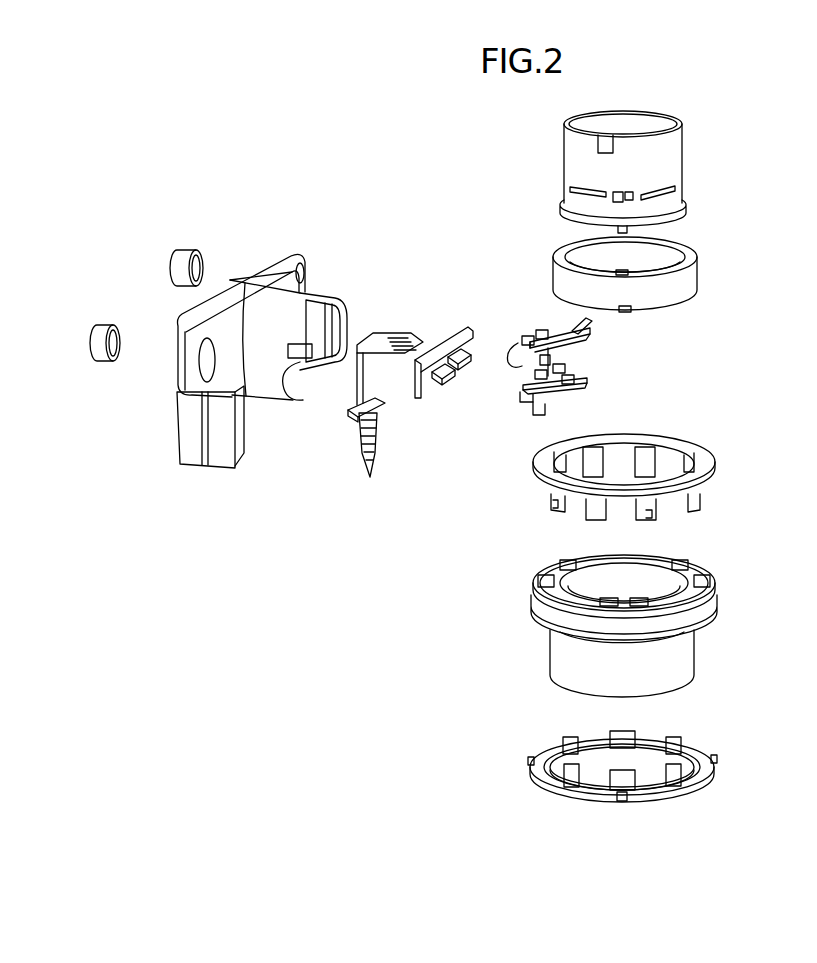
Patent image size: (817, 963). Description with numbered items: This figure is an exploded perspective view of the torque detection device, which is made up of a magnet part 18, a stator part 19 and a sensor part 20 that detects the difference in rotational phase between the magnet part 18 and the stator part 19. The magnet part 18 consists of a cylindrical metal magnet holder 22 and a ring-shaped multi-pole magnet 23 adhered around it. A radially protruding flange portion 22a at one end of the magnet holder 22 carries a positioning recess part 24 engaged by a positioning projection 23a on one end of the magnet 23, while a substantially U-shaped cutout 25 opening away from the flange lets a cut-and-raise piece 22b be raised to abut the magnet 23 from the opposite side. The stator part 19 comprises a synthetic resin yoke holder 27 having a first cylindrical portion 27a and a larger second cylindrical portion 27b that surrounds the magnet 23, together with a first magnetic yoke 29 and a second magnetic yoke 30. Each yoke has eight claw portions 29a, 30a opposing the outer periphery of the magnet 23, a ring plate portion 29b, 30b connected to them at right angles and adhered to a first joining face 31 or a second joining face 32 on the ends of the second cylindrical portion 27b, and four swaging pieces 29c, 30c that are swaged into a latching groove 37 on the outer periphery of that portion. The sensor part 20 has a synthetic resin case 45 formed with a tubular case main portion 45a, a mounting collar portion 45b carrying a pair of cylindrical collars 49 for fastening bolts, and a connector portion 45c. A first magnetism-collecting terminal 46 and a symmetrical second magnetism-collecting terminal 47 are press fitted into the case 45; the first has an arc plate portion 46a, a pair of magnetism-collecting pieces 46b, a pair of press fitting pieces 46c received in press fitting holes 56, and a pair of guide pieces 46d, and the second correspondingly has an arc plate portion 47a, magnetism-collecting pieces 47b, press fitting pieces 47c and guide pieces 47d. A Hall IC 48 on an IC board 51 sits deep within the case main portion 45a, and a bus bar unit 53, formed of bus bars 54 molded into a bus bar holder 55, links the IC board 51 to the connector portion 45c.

The magnet part 18 is at (557, 188).
The stator part 19 is at (723, 603).
The sensor part 20 is at (285, 246).
The magnet holder 22 is at (672, 165).
The flange portion 22a is at (690, 216).
The cut-and-raise piece 22b is at (620, 226).
The magnet 23 is at (690, 280).
The positioning projection 23a is at (628, 276).
The positioning recess part 24 is at (655, 247).
The cutout 25 is at (628, 192).
The yoke holder 27 is at (543, 658).
The first cylindrical portion 27a is at (688, 668).
The second cylindrical portion 27b is at (550, 622).
The first magnetic yoke 29 is at (724, 774).
The claw portions 29a is at (672, 740).
The ring plate portion 29b is at (672, 805).
The swaging pieces 29c is at (528, 760).
The second magnetic yoke 30 is at (720, 454).
The claw portions 30a is at (668, 517).
The ring plate portion 30b is at (683, 447).
The swaging pieces 30c is at (552, 503).
The first joining face 31 is at (686, 648).
The second joining face 32 is at (580, 550).
The latching groove 37 is at (623, 630).
The case 45 is at (264, 412).
The case main portion 45a is at (316, 292).
The mounting collar portion 45b is at (270, 270).
The connector portion 45c is at (177, 442).
The first magnetism-collecting terminal 46 is at (585, 389).
The arc plate portion 46a is at (565, 397).
The magnetism-collecting pieces 46b is at (531, 393).
The press fitting pieces 46c is at (550, 376).
The guide pieces 46d is at (578, 381).
The second magnetism-collecting terminal 47 is at (578, 346).
The arc plate portion 47a is at (566, 339).
The magnetism-collecting pieces 47b is at (522, 343).
The press fitting pieces 47c is at (560, 330).
The guide pieces 47d is at (580, 322).
The Hall IC 48 is at (460, 370).
The cylindrical collars 49 is at (184, 256).
The IC board 51 is at (426, 398).
The bus bar unit 53 is at (389, 326).
The bus bars 54 is at (371, 477).
The bus bar holder 55 is at (348, 404).
The press fitting holes 56 is at (333, 357).